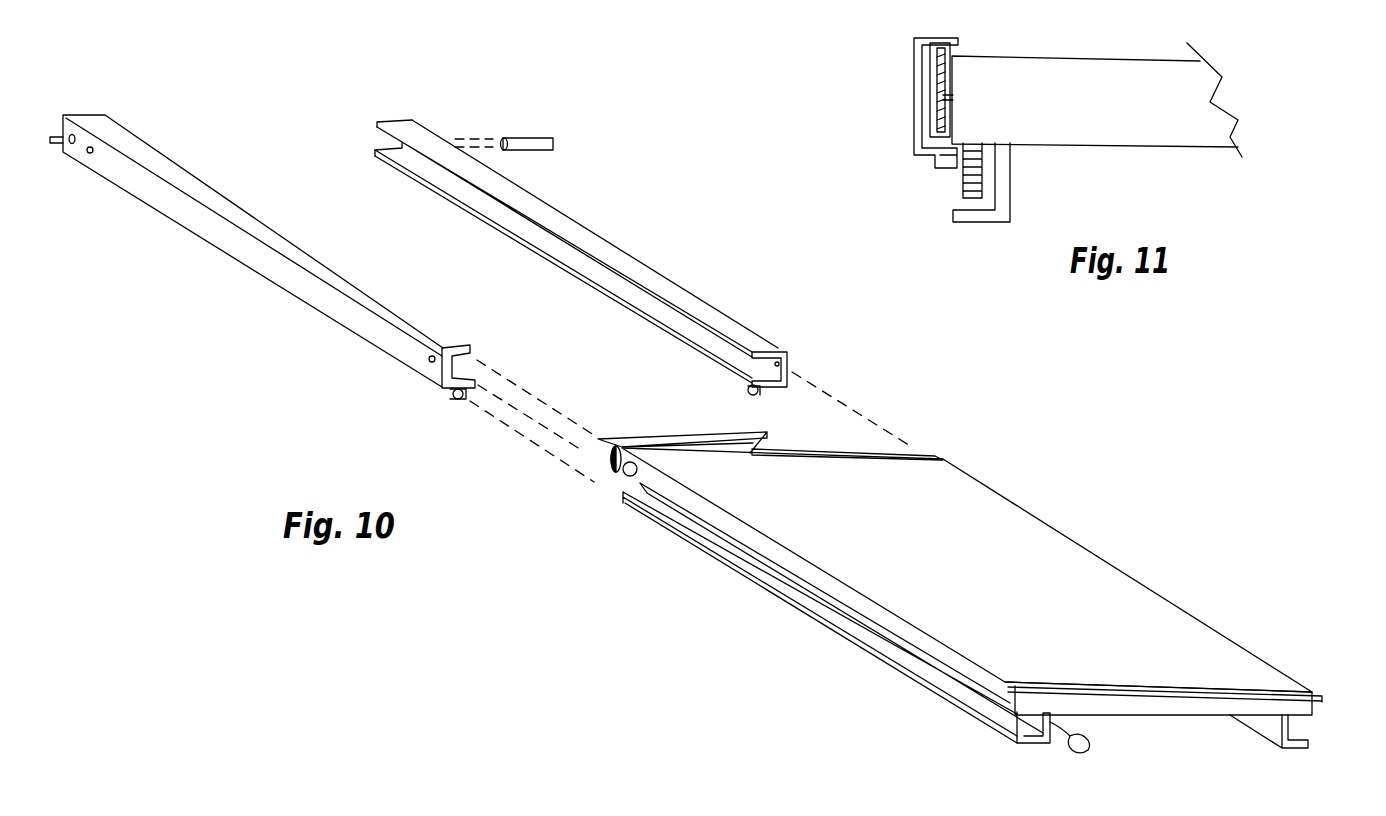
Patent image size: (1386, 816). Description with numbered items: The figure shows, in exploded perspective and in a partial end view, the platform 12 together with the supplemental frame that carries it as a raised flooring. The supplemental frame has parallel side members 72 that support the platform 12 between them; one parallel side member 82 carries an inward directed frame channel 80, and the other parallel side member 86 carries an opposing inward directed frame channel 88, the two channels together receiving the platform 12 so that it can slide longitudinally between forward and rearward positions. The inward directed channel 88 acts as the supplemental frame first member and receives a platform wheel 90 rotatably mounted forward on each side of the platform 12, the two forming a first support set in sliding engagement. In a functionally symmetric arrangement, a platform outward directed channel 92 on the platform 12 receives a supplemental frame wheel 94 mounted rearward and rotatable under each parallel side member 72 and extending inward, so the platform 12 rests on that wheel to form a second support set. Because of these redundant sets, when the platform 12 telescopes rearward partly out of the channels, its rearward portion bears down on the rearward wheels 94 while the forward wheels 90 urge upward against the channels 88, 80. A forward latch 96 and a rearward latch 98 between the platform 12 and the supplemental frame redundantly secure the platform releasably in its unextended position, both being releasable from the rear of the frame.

In FIG. 10, the platform 12 is at (992, 512).
In FIG. 11, the platform 12 is at (1097, 100).
In FIG. 10, the supplemental frame parallel side member 72 is at (418, 251).
In FIG. 10, the inward directed frame channel 80 is at (471, 359).
In FIG. 10, the parallel side member 82 is at (411, 319).
In FIG. 11, the parallel side member 82 is at (915, 82).
In FIG. 10, the parallel side member 86 is at (572, 220).
In FIG. 10, the inward directed frame channel 88 is at (385, 141).
In FIG. 10, the platform wheel 90 is at (624, 481).
In FIG. 11, the platform wheel 90 is at (937, 50).
In FIG. 10, the platform outward directed channel 92 is at (1012, 728).
In FIG. 10, the supplemental frame wheel 94 is at (452, 391).
In FIG. 10, the forward latch 96 is at (768, 448).
In FIG. 10, the rearward latch 98 is at (1166, 694).